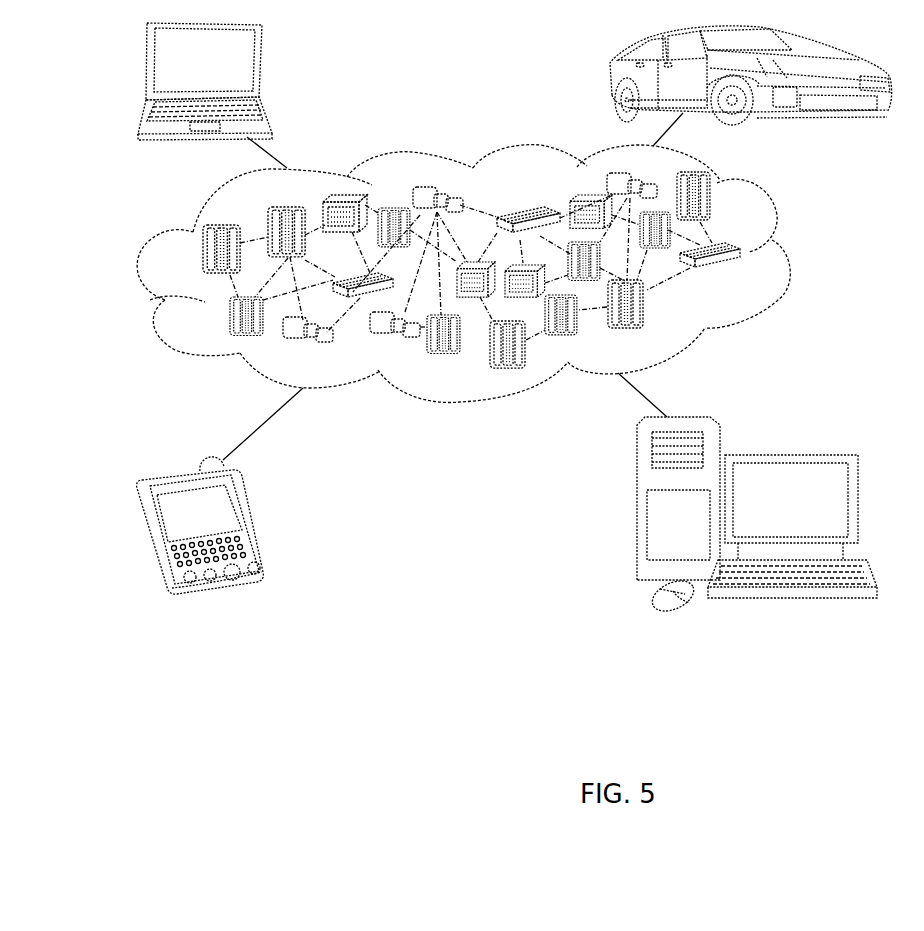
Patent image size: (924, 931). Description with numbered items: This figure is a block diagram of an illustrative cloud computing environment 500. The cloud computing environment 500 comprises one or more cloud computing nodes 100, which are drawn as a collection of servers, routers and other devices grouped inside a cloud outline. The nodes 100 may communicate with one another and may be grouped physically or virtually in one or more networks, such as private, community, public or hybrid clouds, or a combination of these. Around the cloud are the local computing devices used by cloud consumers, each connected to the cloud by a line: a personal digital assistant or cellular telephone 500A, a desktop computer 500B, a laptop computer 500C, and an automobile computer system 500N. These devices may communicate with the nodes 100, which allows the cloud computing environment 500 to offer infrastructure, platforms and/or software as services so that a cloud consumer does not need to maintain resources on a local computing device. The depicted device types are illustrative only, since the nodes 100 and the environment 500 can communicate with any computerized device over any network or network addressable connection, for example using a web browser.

The cloud computing nodes 100 is at (752, 280).
The cloud computing environment 500 is at (795, 254).
The personal digital assistant (PDA) or cellular telephone 500A is at (250, 520).
The desktop computer 500B is at (788, 453).
The laptop computer 500C is at (263, 65).
The automobile computer system 500N is at (610, 77).